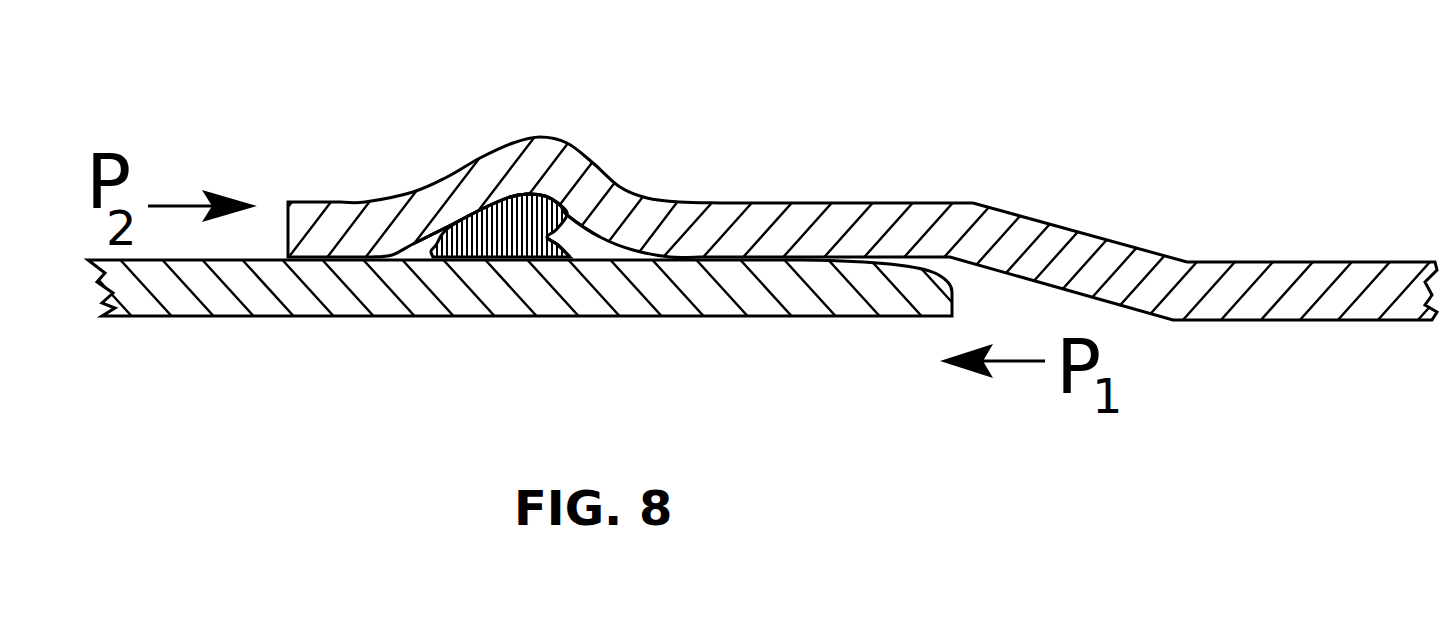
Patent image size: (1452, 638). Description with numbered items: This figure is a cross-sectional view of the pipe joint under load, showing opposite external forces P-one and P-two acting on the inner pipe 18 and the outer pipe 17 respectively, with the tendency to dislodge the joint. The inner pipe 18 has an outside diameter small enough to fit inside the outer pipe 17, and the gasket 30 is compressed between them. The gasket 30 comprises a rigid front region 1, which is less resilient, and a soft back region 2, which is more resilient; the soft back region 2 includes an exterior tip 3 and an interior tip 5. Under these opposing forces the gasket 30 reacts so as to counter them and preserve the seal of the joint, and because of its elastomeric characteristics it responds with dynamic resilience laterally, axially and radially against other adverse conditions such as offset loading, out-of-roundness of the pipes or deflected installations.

The rigid front region 1 is at (450, 233).
The soft back region 2 is at (517, 198).
The exterior tip 3 is at (568, 213).
The interior tip 5 is at (567, 259).
The outer pipe 17 is at (748, 228).
The inner pipe 18 is at (372, 297).
The gasket 30 is at (503, 247).